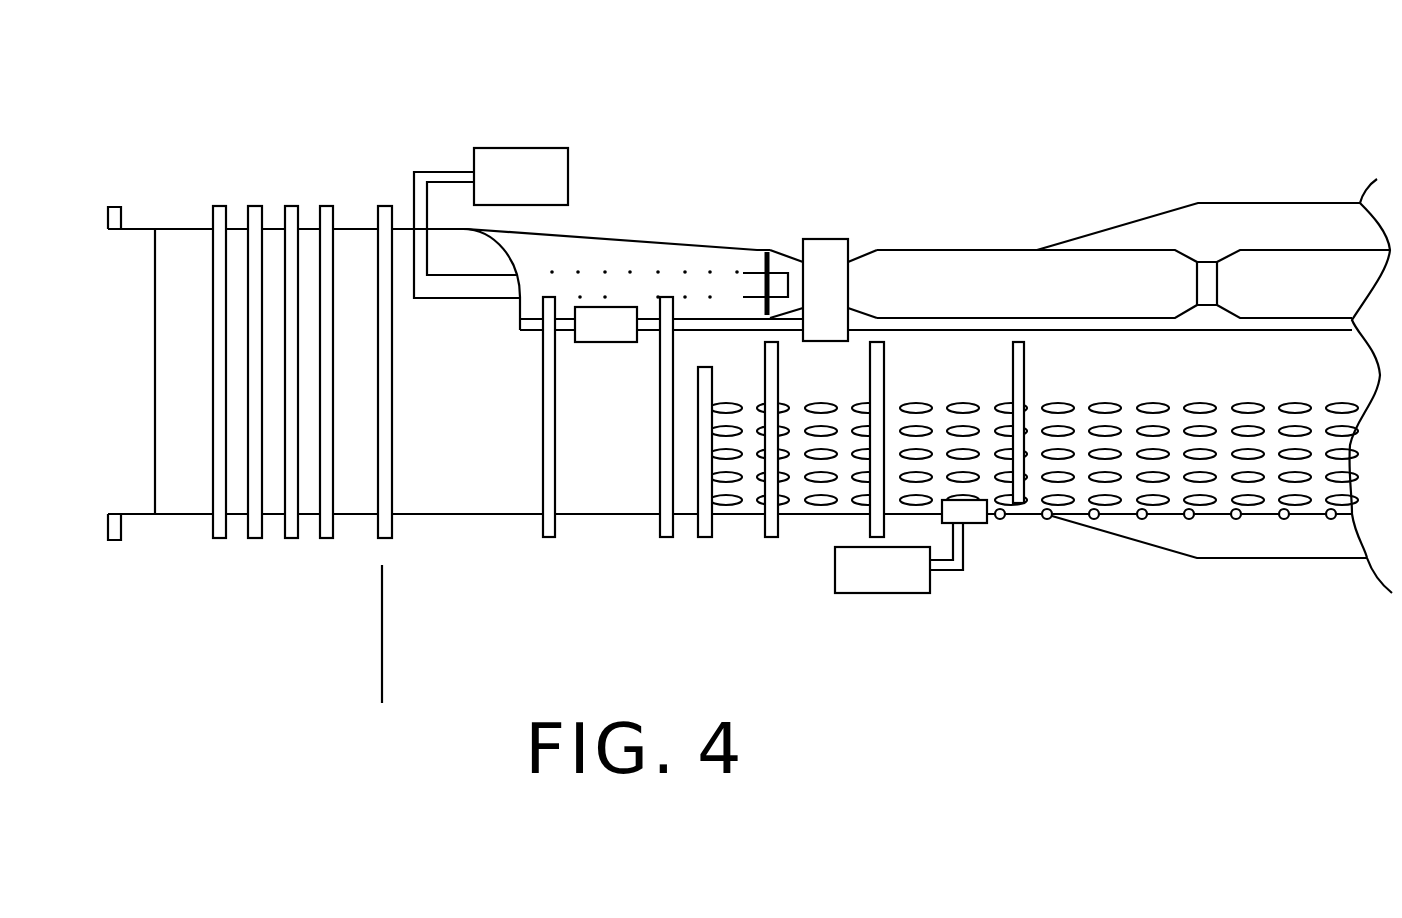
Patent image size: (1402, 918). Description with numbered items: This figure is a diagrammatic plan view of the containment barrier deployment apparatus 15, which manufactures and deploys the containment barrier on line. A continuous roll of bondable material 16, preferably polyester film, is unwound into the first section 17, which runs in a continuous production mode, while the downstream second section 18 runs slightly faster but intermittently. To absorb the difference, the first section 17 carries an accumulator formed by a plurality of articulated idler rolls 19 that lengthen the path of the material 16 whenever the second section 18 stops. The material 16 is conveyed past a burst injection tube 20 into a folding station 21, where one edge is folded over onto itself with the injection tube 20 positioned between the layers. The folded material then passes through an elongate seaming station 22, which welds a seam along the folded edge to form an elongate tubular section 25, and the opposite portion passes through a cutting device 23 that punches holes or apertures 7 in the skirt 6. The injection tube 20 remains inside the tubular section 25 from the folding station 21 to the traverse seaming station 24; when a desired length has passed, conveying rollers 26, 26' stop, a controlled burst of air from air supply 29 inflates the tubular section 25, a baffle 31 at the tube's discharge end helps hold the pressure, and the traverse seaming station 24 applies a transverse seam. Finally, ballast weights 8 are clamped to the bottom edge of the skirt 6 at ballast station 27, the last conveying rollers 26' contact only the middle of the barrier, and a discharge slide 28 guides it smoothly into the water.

The skirt 6 is at (1270, 500).
The holes or apertures 7 is at (1325, 402).
The ballast weights 8 is at (1142, 519).
The containment barrier deployment apparatus 15 is at (270, 563).
The continuous roll of bondable material 16 is at (130, 243).
The first section 17 is at (382, 633).
The second section 18 is at (382, 633).
The articulated idler rolls 19 is at (328, 226).
The burst injection tube 20 is at (445, 180).
The folding station 21 is at (545, 263).
The elongate seaming station 22 is at (622, 317).
The cutting device 23 is at (702, 533).
The traverse seaming station 24 is at (838, 248).
The elongate tubular section 25 is at (712, 247).
The conveying rollers 26 is at (527, 347).
The conveying rollers 26' is at (1033, 478).
The ballast station 27 is at (877, 585).
The discharge slide 28 is at (1175, 230).
The air supply 29 is at (533, 167).
The baffle 31 is at (772, 267).